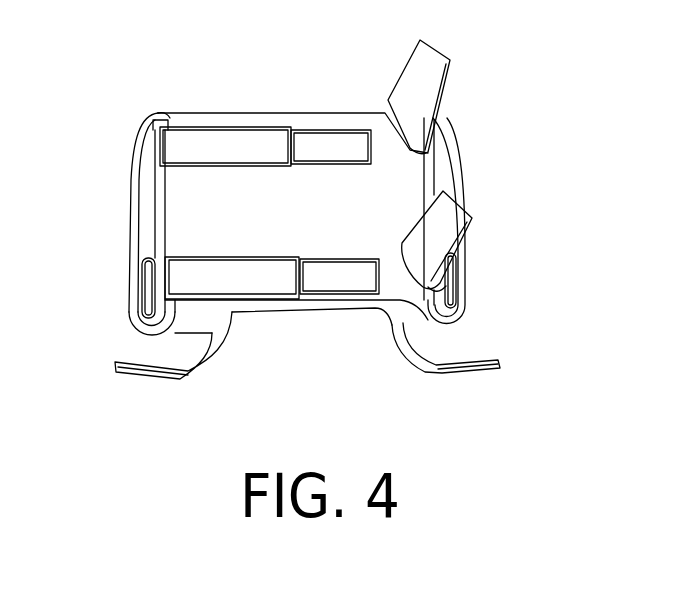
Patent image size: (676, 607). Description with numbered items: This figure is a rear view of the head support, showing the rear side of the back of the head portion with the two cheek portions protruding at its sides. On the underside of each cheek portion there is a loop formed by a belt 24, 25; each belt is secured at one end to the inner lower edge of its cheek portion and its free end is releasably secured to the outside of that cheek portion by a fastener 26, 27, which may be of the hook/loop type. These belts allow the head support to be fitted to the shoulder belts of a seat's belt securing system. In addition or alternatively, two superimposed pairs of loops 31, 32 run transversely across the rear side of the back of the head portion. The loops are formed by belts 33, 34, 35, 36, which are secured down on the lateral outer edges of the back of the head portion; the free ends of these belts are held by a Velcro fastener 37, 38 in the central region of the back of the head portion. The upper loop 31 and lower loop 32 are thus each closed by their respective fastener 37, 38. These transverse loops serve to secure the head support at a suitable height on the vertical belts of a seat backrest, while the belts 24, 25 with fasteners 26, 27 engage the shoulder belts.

The belt 24 is at (207, 367).
The belt 25 is at (397, 357).
The fastener 26 is at (147, 289).
The fastener 27 is at (470, 358).
The loop 31 is at (279, 115).
The loop 32 is at (278, 250).
The belt 33 is at (425, 63).
The belt 34 is at (206, 140).
The belt 35 is at (435, 217).
The belt 36 is at (207, 272).
The Velcro fastener 37 is at (320, 145).
The Velcro fastener 38 is at (332, 275).